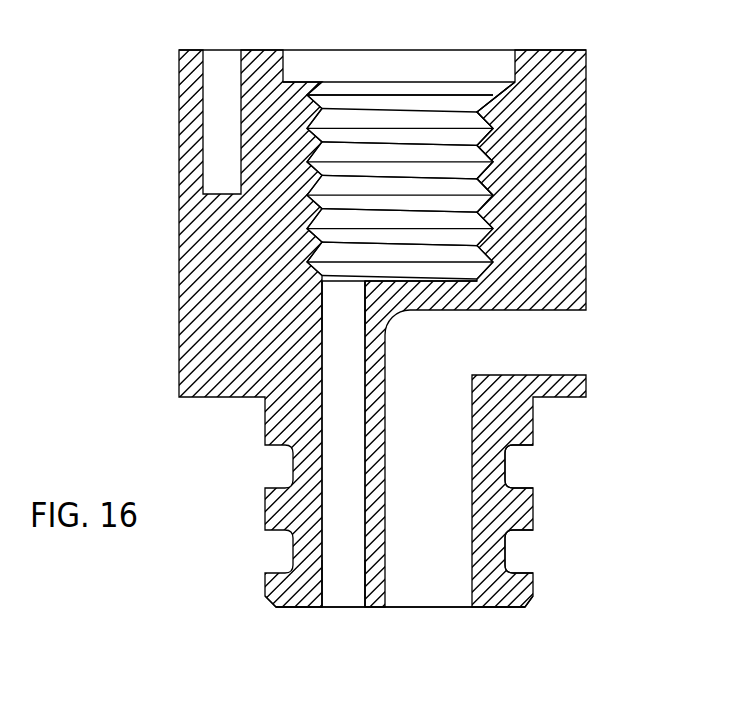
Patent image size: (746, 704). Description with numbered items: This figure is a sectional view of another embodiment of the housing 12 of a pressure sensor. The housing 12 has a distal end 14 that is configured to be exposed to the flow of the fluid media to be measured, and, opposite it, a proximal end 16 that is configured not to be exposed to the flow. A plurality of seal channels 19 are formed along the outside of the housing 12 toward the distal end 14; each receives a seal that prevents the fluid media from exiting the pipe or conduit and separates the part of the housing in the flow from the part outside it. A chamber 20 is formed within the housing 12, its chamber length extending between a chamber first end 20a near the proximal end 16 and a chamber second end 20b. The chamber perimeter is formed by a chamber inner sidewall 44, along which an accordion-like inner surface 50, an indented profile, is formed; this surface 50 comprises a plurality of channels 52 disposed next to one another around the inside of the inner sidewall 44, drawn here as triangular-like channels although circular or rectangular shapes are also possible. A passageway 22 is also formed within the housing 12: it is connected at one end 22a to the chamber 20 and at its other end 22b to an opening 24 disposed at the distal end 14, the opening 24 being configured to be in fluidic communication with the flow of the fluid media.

The housing 12 is at (585, 170).
The distal end 14 is at (498, 607).
The proximal end 16 is at (562, 50).
The seal channel 19 is at (505, 470).
The chamber 20 is at (348, 178).
The chamber first end 20a is at (373, 90).
The chamber second end 20b is at (367, 267).
The passageway 22 is at (337, 428).
The passageway end 22a is at (337, 294).
The passageway end 22b is at (335, 578).
The opening 24 is at (338, 608).
The chamber inner sidewall 44 is at (480, 173).
The accordion-like inner surface 50 is at (411, 150).
The channels 52 is at (481, 97).